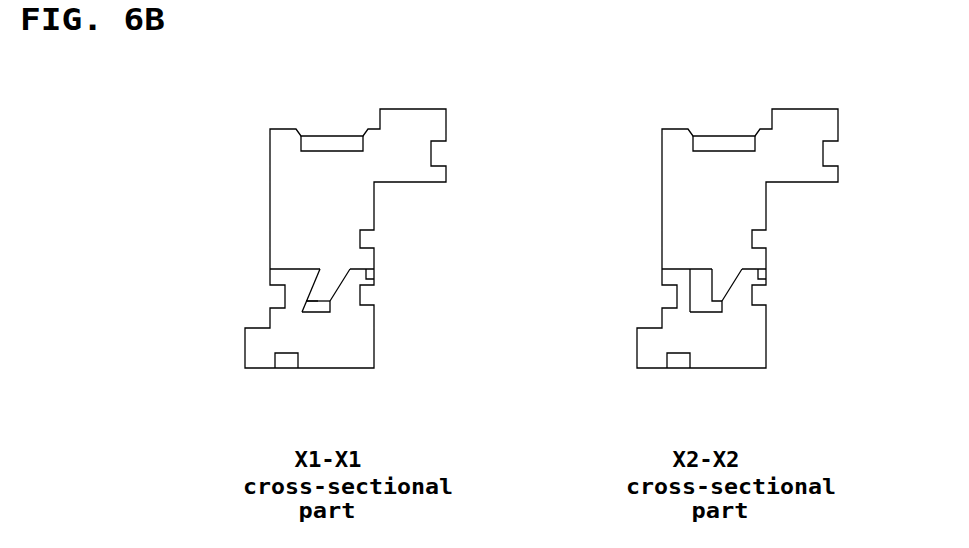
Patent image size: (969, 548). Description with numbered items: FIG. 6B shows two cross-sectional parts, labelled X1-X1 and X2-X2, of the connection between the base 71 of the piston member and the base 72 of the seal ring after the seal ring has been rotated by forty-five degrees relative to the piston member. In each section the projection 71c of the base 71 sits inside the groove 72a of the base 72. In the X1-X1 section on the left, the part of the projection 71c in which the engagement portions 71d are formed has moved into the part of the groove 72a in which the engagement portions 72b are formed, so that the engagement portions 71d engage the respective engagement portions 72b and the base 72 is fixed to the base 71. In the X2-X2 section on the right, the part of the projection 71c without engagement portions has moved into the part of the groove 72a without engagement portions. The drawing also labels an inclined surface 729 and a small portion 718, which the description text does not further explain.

The first member (holder) 71 is at (282, 155).
The second member (base) 72 is at (342, 352).
The protrusion of first member 71c is at (328, 287).
The bottom face of protrusion 71d is at (317, 295).
The elastic bottom piece of groove 72a is at (305, 308).
The elastic side piece of groove 72b is at (308, 278).
The inclined surface 729 is at (350, 270).
The small engaging portion 718 is at (368, 277).